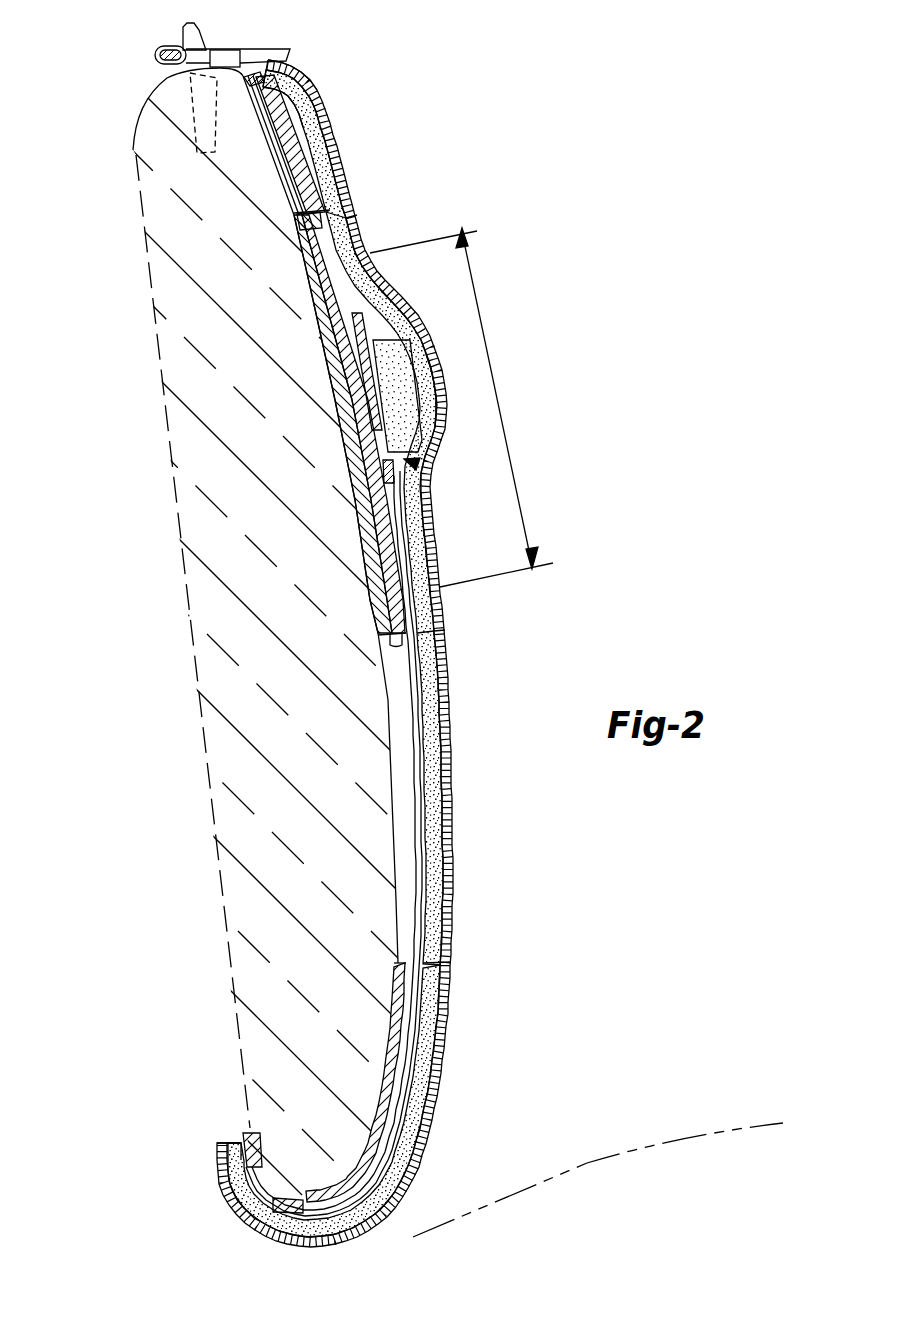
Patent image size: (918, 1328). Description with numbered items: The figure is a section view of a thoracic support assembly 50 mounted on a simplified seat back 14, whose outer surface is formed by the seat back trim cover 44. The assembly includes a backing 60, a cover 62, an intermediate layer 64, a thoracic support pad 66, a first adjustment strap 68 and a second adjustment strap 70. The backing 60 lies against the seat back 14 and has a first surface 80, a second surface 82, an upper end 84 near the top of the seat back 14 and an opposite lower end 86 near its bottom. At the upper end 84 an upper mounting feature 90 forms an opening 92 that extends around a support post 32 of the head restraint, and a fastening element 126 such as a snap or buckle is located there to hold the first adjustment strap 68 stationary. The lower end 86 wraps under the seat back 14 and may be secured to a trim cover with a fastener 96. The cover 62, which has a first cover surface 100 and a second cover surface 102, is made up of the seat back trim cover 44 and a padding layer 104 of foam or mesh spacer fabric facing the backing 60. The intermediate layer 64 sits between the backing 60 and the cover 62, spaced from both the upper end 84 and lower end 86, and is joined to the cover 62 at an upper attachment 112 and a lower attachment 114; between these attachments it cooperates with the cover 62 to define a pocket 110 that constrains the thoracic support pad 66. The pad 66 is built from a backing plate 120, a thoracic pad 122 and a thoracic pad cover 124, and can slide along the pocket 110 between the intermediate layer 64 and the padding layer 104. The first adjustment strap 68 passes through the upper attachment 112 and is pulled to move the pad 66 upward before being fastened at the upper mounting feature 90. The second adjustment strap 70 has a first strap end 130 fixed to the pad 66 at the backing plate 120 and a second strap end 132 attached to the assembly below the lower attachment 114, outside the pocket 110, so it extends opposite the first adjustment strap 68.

The seat back 14 is at (227, 342).
The support post 32 is at (190, 38).
The seat back trim cover 44 is at (137, 192).
The thoracic support assembly 50 is at (300, 56).
The backing 60 is at (390, 1100).
The cover 62 is at (310, 84).
The intermediate layer 64 is at (430, 506).
The thoracic support pad 66 is at (342, 348).
The first adjustment strap 68 is at (305, 170).
The second adjustment strap 70 is at (398, 537).
The first surface 80 is at (383, 1073).
The second surface 82 is at (398, 710).
The upper end 84 is at (253, 82).
The lower end 86 is at (240, 1133).
The upper mounting feature 90 is at (160, 48).
The opening 92 is at (214, 38).
The fastener 96 is at (257, 1133).
The first cover surface 100 is at (433, 1070).
The second cover surface 102 is at (437, 1110).
The padding layer 104 is at (315, 108).
The pocket 110 is at (440, 472).
The upper attachment 112 is at (294, 213).
The lower attachment 114 is at (386, 655).
The backing plate 120 is at (372, 388).
The thoracic pad 122 is at (437, 397).
The thoracic pad cover 124 is at (392, 337).
The fastening element 126 is at (233, 50).
The first strap end 130 is at (390, 451).
The second strap end 132 is at (303, 1198).